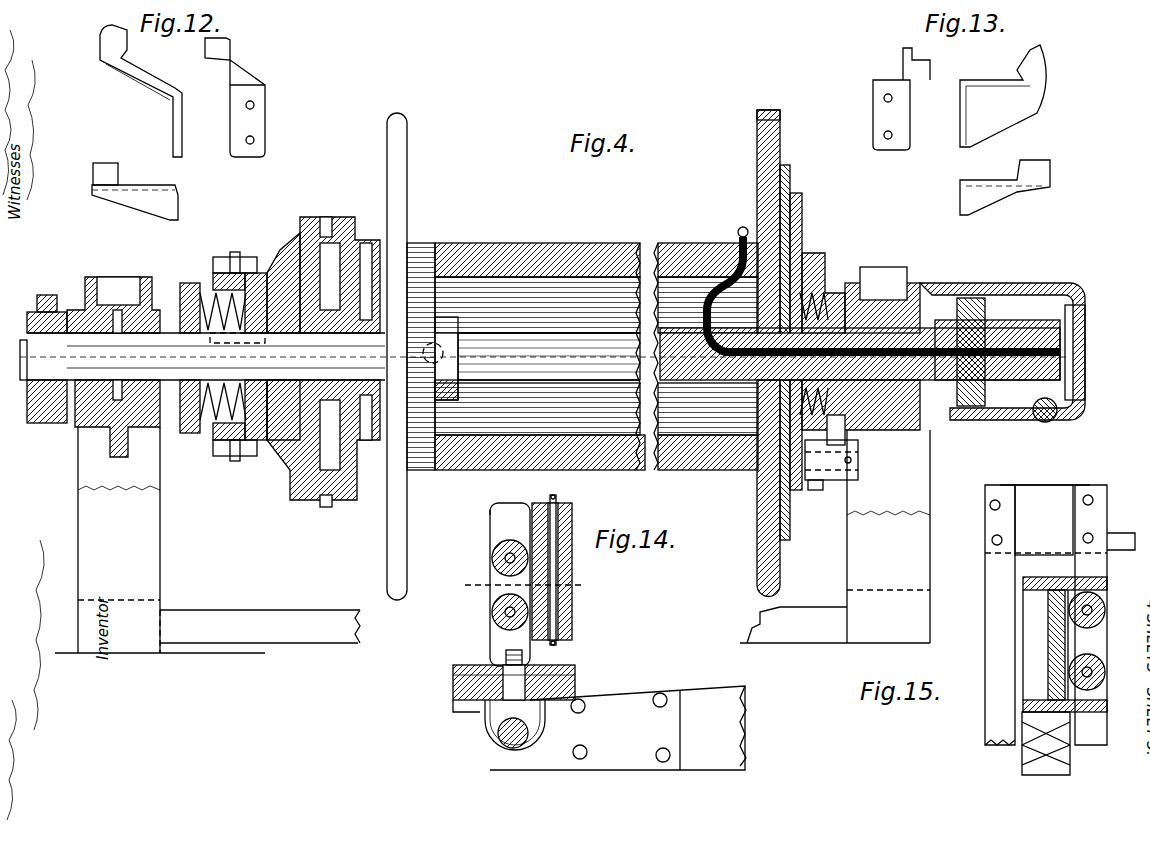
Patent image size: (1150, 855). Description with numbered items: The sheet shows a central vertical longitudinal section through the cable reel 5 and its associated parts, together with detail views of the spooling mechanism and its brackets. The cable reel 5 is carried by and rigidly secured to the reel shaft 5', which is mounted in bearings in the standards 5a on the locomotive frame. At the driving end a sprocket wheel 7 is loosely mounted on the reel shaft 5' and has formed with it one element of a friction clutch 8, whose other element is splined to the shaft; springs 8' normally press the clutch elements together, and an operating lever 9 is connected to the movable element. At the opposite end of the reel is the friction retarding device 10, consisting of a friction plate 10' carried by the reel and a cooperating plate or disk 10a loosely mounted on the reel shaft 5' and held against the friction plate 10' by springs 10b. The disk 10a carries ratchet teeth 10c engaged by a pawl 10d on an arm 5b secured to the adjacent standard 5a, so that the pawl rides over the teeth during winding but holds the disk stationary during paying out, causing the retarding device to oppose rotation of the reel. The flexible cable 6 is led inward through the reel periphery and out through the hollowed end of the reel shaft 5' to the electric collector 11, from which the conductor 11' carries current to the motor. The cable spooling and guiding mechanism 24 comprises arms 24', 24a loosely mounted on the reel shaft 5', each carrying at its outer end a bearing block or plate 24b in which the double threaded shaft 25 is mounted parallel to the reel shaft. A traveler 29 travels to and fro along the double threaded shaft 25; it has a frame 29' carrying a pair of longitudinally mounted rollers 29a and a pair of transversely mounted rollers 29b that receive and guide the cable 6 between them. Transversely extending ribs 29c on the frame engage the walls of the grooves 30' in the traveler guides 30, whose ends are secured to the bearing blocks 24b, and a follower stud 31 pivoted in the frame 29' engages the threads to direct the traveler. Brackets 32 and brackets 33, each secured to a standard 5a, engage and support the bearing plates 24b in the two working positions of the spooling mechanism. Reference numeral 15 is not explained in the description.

In FIG. 4, the cable reel 5 is at (593, 355).
In FIG. 4, the reel shaft 5' is at (545, 358).
In FIG. 4, the standards 5a is at (85, 313).
In FIG. 4, the arm 5b is at (858, 455).
In FIG. 4, the flexible cable 6 is at (743, 228).
In FIG. 4, the sprocket wheel 7 is at (345, 215).
In FIG. 4, the friction clutch 8 is at (283, 315).
In FIG. 4, the springs 8' is at (213, 368).
In FIG. 4, the operating lever 9 is at (247, 255).
In FIG. 4, the friction retarding device 10 is at (861, 331).
In FIG. 4, the friction plate 10' is at (805, 345).
In FIG. 4, the plate or disk 10a is at (802, 208).
In FIG. 4, the springs 10b is at (830, 297).
In FIG. 4, the ratchet teeth 10c is at (821, 243).
In FIG. 4, the pawl 10d is at (818, 488).
In FIG. 4, the electric collector 11 is at (1002, 351).
In FIG. 4, the conductor 11' is at (1043, 423).
In FIG. 14, the pin 15 is at (535, 570).
In FIG. 14, the cable spooling and guiding mechanism 24 is at (618, 708).
In FIG. 15, the cable spooling and guiding mechanism 24 is at (1029, 644).
In FIG. 4, the arm 24' is at (207, 540).
In FIG. 4, the arm 24a is at (863, 428).
In FIG. 14, the bearing block or plate 24b is at (478, 705).
In FIG. 15, the bearing block or plate 24b is at (1044, 520).
In FIG. 14, the double threaded shaft 25 is at (505, 745).
In FIG. 15, the double threaded shaft 25 is at (1040, 748).
In FIG. 14, the traveler 29 is at (494, 584).
In FIG. 15, the traveler 29 is at (1104, 633).
In FIG. 14, the frame 29' is at (472, 525).
In FIG. 14, the longitudinally mounted rollers 29a is at (572, 612).
In FIG. 14, the transversely mounted rollers 29b is at (490, 558).
In FIG. 15, the transversely mounted rollers 29b is at (1023, 645).
In FIG. 14, the transversely extending ribs 29c is at (453, 680).
In FIG. 14, the traveler guides 30 is at (538, 663).
In FIG. 15, the traveler guides 30 is at (1043, 615).
In FIG. 14, the grooves 30' is at (535, 675).
In FIG. 14, the follower stud 31 is at (545, 712).
In FIG. 13, the brackets 32 is at (1043, 126).
In FIG. 12, the brackets 33 is at (225, 68).